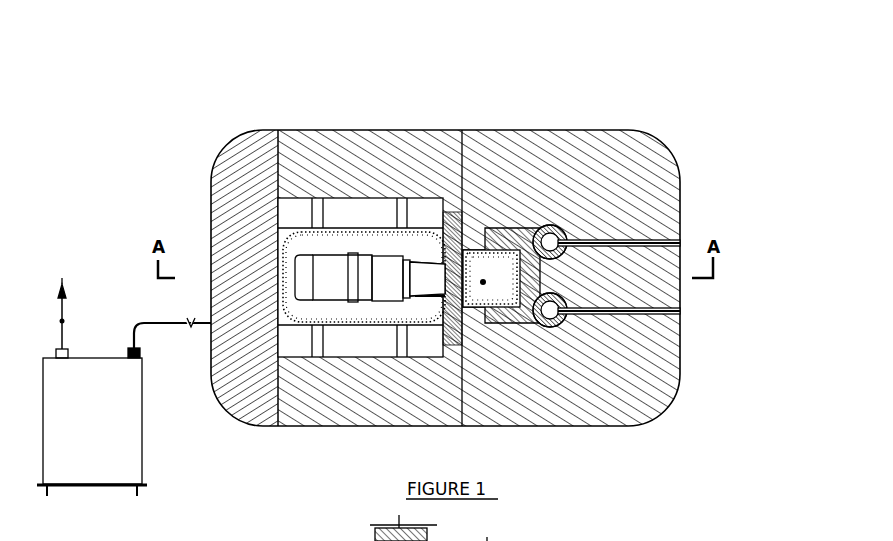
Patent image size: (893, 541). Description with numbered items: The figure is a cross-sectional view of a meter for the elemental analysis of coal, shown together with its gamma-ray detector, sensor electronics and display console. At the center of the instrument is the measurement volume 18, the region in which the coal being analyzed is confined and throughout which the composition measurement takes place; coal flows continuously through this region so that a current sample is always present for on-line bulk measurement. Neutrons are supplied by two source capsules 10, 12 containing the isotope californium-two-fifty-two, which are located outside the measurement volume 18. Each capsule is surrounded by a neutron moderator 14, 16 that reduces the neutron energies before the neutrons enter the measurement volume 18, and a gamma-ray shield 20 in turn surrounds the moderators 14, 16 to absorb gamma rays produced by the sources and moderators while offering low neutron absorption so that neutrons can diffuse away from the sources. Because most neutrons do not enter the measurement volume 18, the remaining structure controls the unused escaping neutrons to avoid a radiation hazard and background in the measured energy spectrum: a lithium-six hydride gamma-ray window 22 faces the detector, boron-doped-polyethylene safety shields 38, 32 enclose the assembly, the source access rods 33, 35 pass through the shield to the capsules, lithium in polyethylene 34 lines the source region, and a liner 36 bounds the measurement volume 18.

The source capsule 10 is at (637, 175).
The source capsule 12 is at (674, 397).
The neutron moderator 14 is at (634, 168).
The neutron moderator 16 is at (631, 404).
The measurement volume 18 is at (317, 369).
The gamma-ray shield 20 is at (608, 382).
The 6LiH gamma-ray window 22 is at (392, 196).
The boron-doped-polyethylene safety shield 32 is at (160, 278).
The source access rod 33 is at (664, 388).
The lithium in polyethylene 34 is at (553, 158).
The source access rod 35 is at (643, 203).
The liner 36 is at (529, 180).
The boron-doped-polyethylene safety shield 38 is at (496, 281).